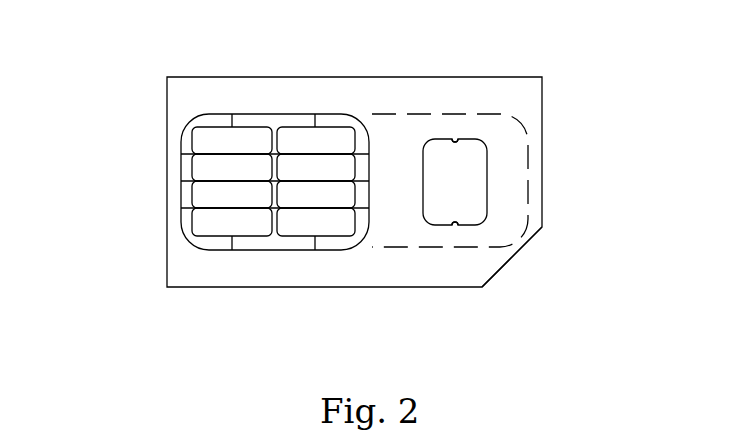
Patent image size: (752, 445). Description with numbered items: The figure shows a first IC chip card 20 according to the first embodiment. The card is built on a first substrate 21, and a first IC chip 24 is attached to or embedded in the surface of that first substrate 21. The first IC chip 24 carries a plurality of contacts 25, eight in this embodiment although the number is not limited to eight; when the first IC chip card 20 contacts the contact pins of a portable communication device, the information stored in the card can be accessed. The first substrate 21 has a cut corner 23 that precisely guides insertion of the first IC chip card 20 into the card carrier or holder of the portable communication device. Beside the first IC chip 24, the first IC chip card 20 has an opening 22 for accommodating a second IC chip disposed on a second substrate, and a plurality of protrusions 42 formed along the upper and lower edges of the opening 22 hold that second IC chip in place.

The first IC chip card 20 is at (543, 77).
The first substrate 21 is at (523, 114).
The opening 22 is at (475, 192).
The cut corner 23 is at (517, 253).
The first IC chip 24 is at (181, 157).
The contacts 25 is at (273, 182).
The protrusions 42 is at (457, 139).